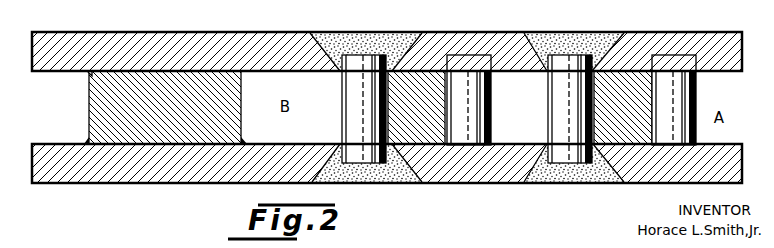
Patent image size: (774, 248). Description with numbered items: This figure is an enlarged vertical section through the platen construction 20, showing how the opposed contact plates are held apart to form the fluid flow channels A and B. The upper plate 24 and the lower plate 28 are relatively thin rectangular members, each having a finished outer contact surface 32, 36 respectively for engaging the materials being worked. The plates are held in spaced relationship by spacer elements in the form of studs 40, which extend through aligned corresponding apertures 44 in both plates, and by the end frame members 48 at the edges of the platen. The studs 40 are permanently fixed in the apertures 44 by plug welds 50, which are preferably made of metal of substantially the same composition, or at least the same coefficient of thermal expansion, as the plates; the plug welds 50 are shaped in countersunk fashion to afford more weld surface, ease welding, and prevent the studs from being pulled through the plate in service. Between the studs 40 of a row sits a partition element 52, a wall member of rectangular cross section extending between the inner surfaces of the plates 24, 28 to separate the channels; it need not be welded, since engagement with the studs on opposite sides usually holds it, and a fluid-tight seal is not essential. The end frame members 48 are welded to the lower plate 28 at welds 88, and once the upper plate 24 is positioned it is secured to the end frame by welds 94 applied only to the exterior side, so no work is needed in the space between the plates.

The platen construction 20 is at (142, 188).
The upper plate 24 is at (125, 37).
The lower plate 28 is at (117, 165).
The outer contact surface 32 is at (183, 32).
The outer contact surface 36 is at (164, 188).
The studs 40 is at (340, 108).
The apertures 44 is at (307, 43).
The end frame members 48 is at (97, 97).
The plug welds 50 is at (393, 33).
The partition element 52 is at (420, 73).
The welds 88 is at (88, 140).
The welds 94 is at (86, 77).